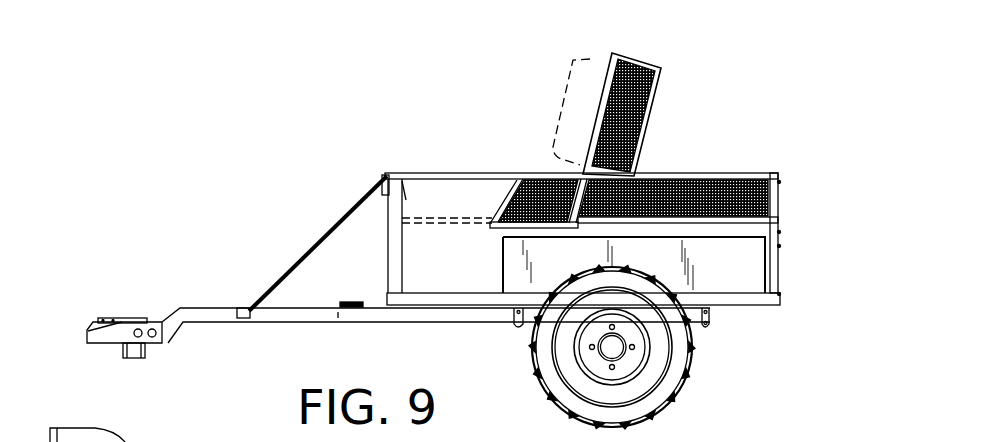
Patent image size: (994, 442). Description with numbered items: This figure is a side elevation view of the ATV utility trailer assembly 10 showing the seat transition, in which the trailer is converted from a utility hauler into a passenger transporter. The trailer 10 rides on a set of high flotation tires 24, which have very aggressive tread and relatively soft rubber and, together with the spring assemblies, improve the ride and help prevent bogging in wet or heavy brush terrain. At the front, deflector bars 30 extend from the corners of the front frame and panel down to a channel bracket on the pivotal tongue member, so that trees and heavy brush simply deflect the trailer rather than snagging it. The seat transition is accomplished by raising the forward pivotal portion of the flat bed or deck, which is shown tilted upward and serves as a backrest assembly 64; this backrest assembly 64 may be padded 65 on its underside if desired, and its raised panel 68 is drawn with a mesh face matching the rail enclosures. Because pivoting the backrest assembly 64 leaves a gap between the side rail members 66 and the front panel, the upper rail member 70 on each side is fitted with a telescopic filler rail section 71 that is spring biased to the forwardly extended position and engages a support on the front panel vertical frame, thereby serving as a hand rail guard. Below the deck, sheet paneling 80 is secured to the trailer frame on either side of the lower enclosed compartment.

The utility trailer assembly 10 is at (568, 60).
The high flotation tires 24 is at (685, 383).
The deflector bars 30 is at (312, 300).
The backrest assembly 64 is at (667, 58).
The padding 65 is at (590, 58).
The side rail members 66 is at (738, 174).
The gate mesh 68 is at (652, 108).
The upper rail member 70 is at (542, 178).
The telescopic filler rail section 71 is at (403, 175).
The side paneling 80 is at (738, 279).